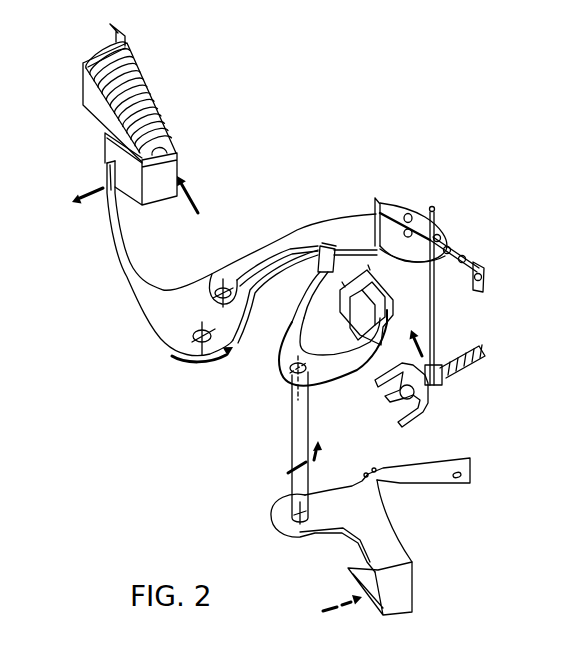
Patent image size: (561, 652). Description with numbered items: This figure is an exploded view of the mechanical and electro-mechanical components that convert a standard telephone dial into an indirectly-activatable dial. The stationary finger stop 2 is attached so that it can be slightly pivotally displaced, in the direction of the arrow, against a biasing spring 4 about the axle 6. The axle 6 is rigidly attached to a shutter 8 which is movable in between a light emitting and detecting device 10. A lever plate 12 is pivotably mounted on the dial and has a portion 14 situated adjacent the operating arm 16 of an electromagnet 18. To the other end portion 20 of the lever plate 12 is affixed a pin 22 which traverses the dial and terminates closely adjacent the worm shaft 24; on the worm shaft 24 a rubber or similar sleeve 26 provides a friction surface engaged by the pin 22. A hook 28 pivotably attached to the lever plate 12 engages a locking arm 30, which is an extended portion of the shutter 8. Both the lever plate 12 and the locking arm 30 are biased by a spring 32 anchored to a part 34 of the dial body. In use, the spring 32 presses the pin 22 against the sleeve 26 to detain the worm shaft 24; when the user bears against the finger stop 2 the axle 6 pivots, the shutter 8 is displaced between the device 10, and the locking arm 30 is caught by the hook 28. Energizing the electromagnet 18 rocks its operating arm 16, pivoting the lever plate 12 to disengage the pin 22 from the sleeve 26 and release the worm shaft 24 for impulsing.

The finger stop 2 is at (372, 540).
The biasing spring 4 is at (423, 482).
The axle 6 is at (300, 430).
The shutter 8 is at (333, 368).
The light emitting and detecting device 10 is at (385, 302).
The lever plate 12 is at (167, 317).
The portion 14 is at (107, 193).
The operating arm 16 is at (120, 158).
The electromagnet 18 is at (146, 102).
The end portion 20 is at (417, 256).
The pin 22 is at (440, 320).
The worm shaft 24 is at (472, 368).
The sleeve 26 is at (447, 376).
The hook 28 is at (347, 237).
The locking arm 30 is at (297, 323).
The spring 32 is at (446, 248).
The part 34 is at (485, 287).